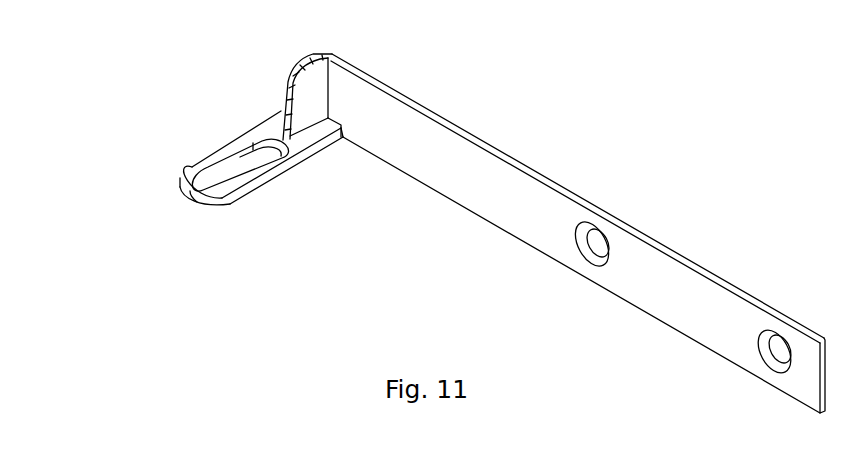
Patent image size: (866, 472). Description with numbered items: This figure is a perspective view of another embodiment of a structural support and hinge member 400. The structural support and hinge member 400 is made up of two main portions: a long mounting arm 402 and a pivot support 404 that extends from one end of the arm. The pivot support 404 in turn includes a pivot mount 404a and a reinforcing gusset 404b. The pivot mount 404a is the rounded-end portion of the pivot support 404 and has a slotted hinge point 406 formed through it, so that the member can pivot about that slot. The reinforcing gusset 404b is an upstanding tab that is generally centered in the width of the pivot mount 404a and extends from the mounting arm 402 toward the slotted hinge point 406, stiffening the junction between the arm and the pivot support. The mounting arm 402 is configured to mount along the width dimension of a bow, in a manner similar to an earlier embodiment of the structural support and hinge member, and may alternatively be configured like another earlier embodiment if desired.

The structural support and hinge member 400 is at (502, 227).
The mounting arm 402 is at (488, 221).
The pivot support 404 is at (319, 124).
The pivot mount 404a is at (233, 196).
The reinforcing gusset 404b is at (306, 107).
The slotted hinge point 406 is at (228, 173).